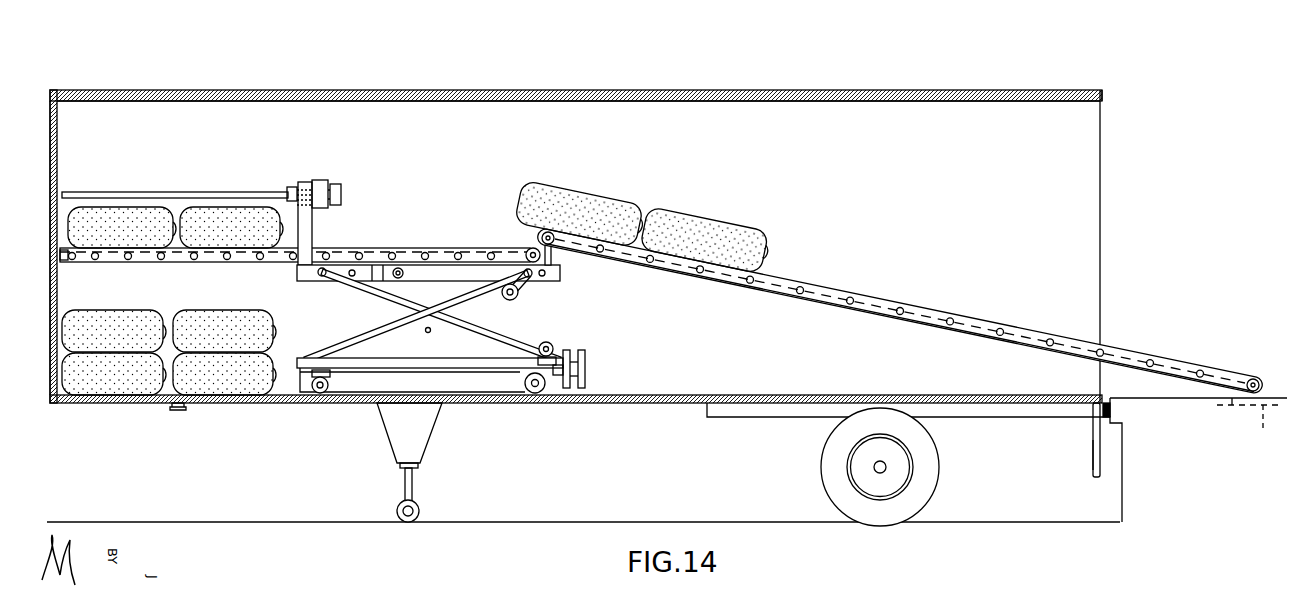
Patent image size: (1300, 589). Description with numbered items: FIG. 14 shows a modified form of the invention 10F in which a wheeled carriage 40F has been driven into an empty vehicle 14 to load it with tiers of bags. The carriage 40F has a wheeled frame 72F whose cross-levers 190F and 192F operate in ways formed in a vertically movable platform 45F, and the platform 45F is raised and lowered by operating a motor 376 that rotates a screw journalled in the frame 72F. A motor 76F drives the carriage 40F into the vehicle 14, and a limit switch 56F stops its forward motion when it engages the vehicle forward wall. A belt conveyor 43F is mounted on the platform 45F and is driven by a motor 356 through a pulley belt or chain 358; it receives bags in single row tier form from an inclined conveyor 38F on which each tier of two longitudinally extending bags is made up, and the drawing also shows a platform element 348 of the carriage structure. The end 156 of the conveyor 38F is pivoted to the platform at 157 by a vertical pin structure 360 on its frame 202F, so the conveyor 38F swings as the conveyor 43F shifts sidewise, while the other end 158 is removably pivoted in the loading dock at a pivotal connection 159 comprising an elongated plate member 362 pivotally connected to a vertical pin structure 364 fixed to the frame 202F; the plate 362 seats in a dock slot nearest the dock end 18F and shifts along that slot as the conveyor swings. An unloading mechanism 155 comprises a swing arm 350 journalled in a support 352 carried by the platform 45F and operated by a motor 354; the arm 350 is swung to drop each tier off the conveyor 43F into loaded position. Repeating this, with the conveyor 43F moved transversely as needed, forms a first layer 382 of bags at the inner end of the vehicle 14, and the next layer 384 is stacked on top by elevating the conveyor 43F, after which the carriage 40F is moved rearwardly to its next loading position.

The modified form of the invention 10F is at (1043, 120).
The vehicle 14 is at (245, 108).
The first layer of bags 382 is at (50, 385).
The dock end 18F is at (1099, 418).
The conveyor 43F is at (424, 249).
The limit switch 56F is at (64, 262).
The pulley belt or chain 358 is at (528, 255).
The swing arm 350 is at (160, 192).
The unloading mechanism 155 is at (268, 186).
The support 352 is at (312, 232).
The motor 354 is at (338, 190).
The next layer of bags 384 is at (137, 322).
The carriage 40F is at (495, 318).
The lift platform frame 348 is at (476, 272).
The platform 45F is at (549, 283).
The cross-lever 190F is at (370, 302).
The cross-lever 192F is at (472, 302).
The motor 356 is at (526, 296).
The wheeled frame 72F is at (497, 375).
The motor 376 is at (560, 343).
The motor 76F is at (588, 370).
The vertical pin structure 360 is at (556, 266).
The conveyor 38F is at (900, 311).
The frame 202F is at (878, 320).
The end of conveyor 156 is at (563, 246).
The other end of conveyor 158 is at (1230, 385).
The pivot 157 is at (562, 240).
The vertical pin structure 364 is at (1262, 397).
The elongated plate member 362 is at (1250, 432).
The pivotal connection 159 is at (1240, 410).